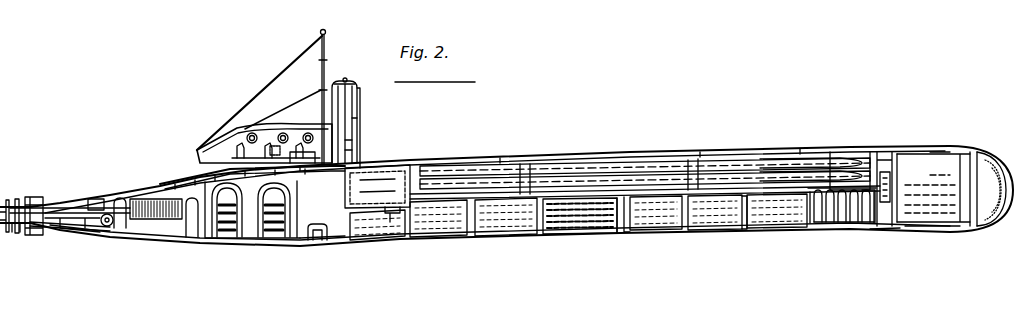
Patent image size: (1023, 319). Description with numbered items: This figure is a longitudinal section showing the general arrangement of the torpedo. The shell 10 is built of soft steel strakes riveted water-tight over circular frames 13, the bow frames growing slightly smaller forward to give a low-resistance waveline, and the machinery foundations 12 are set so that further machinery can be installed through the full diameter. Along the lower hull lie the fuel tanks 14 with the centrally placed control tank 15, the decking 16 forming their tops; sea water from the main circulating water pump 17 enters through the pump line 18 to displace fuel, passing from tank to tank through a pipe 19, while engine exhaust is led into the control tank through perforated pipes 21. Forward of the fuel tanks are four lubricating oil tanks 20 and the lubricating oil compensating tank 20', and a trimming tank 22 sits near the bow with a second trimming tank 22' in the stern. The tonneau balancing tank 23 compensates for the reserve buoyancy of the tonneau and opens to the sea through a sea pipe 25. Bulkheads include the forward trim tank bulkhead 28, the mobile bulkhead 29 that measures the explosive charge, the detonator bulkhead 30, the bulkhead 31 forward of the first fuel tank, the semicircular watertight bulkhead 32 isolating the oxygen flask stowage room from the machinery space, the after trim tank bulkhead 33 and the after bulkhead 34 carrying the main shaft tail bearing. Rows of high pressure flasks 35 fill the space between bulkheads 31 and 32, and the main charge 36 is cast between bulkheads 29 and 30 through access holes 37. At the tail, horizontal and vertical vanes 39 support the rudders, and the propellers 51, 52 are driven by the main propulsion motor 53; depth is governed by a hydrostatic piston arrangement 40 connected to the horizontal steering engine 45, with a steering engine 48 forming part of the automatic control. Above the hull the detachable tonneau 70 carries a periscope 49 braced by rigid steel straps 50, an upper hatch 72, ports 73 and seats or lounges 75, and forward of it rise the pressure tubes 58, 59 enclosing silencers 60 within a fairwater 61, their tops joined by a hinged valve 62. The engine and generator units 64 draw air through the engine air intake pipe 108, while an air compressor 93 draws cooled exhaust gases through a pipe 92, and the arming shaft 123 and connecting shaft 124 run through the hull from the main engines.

The shell 10 is at (854, 158).
The machinery foundations 12 is at (283, 241).
The frames 13 is at (888, 229).
The fuel tanks 14 is at (372, 241).
The control tank 15 is at (621, 234).
The decking 16 is at (580, 166).
The main circulating water pump 17 is at (882, 160).
The pump line 18 is at (802, 170).
The pipe 19 is at (743, 230).
The lubricating oil tanks 20 is at (842, 232).
The lubricating oil compensating tank 20' is at (844, 256).
The perforated pipes 21 is at (582, 234).
The trimming tank 22 is at (995, 163).
The stern trimming tank 22' is at (70, 241).
The tonneau balancing tank 23 is at (318, 245).
The sea pipe 25 is at (331, 247).
The forward trim tank bulkhead 28 is at (980, 160).
The mobile bulkhead 29 is at (968, 163).
The detonator bulkhead 30 is at (904, 160).
The bulkhead 31 is at (872, 230).
The semi-circular watertight bulkhead 32 is at (360, 181).
The after trim tank bulkhead 33 is at (72, 235).
The after bulkhead 34 is at (21, 234).
The high pressure flasks 35 is at (616, 160).
The main charge 36 is at (945, 231).
The access holes 37 is at (940, 148).
The vanes 39 is at (40, 199).
The hydrostatic piston arrangement 40 is at (97, 200).
The horizontal steering engine 45 is at (70, 207).
The steering engine 48 is at (106, 227).
The periscope 49 is at (320, 38).
The rigid steel straps 50 is at (282, 82).
The propeller 51 is at (8, 201).
The propeller 52 is at (20, 204).
The main propulsion motor 53 is at (152, 199).
The after pressure tube 58 is at (348, 108).
The forward pressure tube 59 is at (353, 142).
The silencers 60 is at (359, 90).
The fairwater 61 is at (358, 120).
The hinged valve 62 is at (346, 81).
The engine and generator units 64 is at (226, 239).
The tonneau 70 is at (212, 140).
The upper hatch 72 is at (288, 116).
The ports 73 is at (240, 142).
The seats or lounges 75 is at (264, 149).
The pipe 92 is at (392, 217).
The air compressor 93 is at (112, 230).
The engine air intake pipe 108 is at (196, 168).
The arming shaft 123 is at (839, 148).
The connecting shaft 124 is at (890, 150).